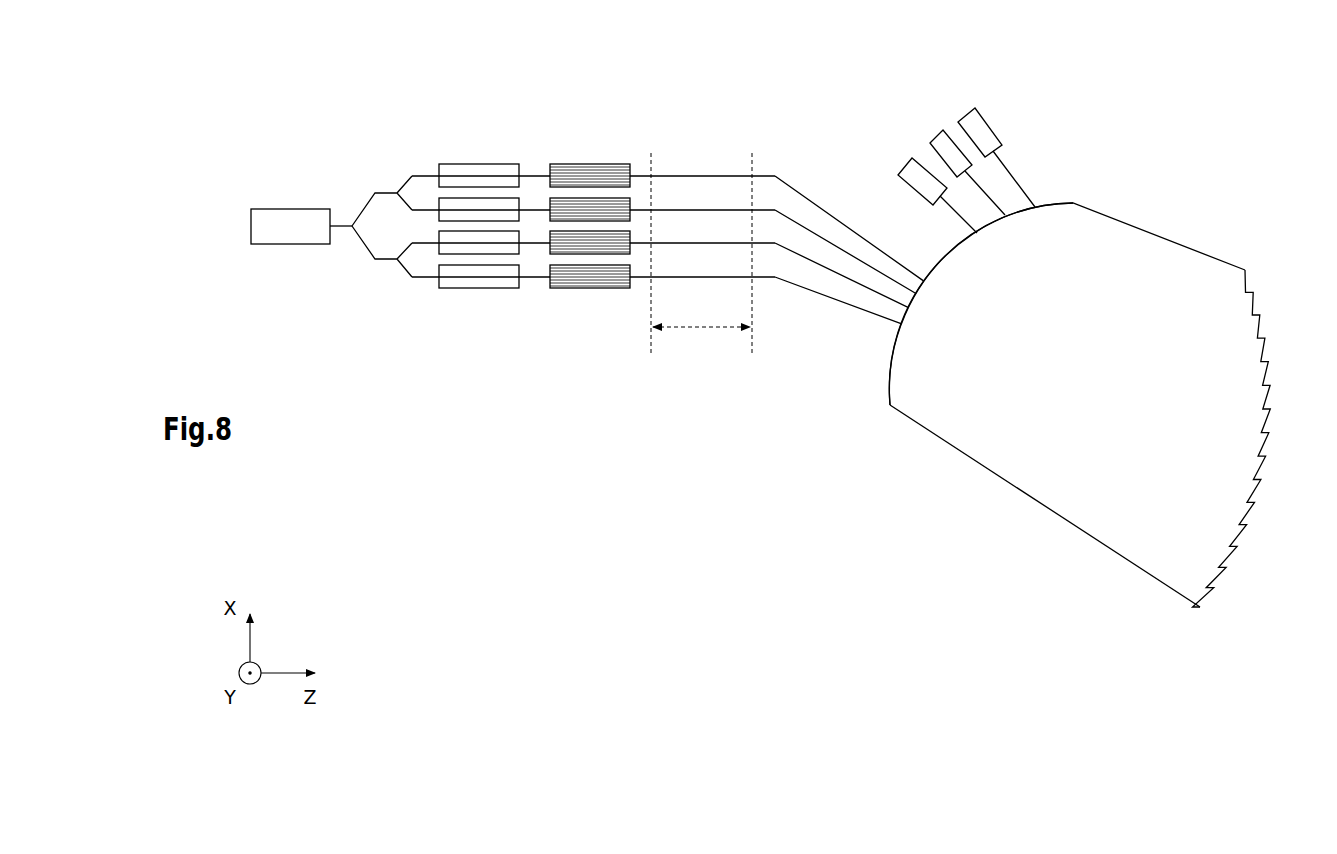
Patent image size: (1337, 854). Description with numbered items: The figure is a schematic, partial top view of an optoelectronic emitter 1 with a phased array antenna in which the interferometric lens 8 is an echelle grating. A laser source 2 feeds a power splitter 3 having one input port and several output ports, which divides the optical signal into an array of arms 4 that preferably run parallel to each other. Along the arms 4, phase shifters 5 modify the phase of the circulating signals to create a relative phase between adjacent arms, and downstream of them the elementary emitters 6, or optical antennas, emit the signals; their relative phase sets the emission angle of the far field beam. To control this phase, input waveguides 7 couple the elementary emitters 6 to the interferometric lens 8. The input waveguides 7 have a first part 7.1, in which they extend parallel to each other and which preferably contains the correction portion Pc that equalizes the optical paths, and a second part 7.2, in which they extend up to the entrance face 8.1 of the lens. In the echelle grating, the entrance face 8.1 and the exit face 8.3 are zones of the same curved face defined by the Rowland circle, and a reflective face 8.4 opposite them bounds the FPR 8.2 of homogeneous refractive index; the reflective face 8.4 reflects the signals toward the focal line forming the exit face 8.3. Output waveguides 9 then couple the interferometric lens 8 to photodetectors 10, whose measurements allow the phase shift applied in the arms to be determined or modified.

The optoelectronic emitter 1 is at (408, 76).
The laser source 2 is at (289, 250).
The power splitter 3 is at (386, 270).
The arms 4 is at (427, 281).
The phase shifters 5 is at (482, 292).
The elementary emitters 6 is at (593, 294).
The input waveguides 7 is at (777, 230).
The first part 7.1 is at (686, 172).
The second part 7.2 is at (805, 194).
The interferometric lens 8 is at (1054, 388).
The entrance face 8.1 is at (901, 317).
The FPR 8.2 is at (1021, 205).
The exit face 8.3 is at (1030, 465).
The reflective face 8.4 is at (1213, 571).
The output waveguides 9 is at (1011, 157).
The photodetectors 10 is at (901, 161).